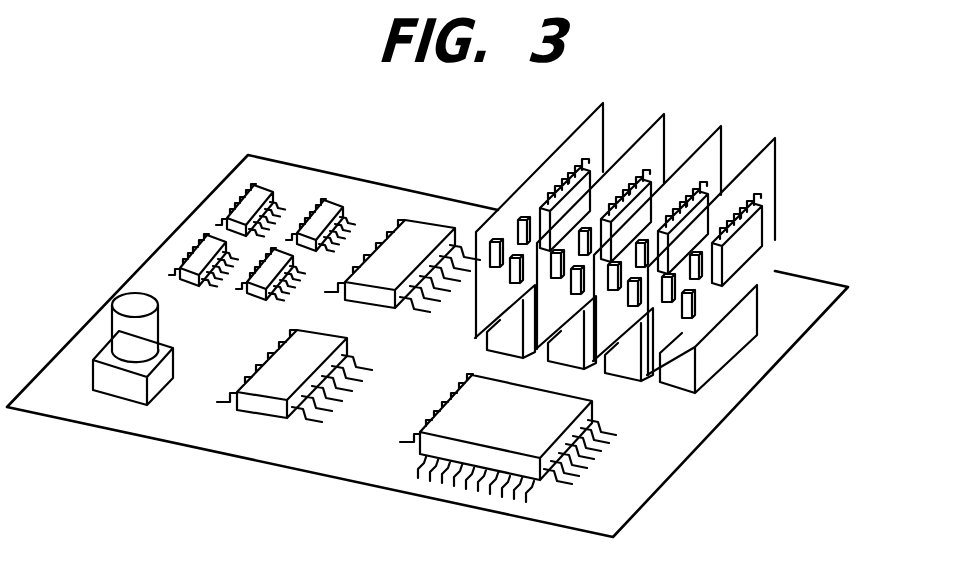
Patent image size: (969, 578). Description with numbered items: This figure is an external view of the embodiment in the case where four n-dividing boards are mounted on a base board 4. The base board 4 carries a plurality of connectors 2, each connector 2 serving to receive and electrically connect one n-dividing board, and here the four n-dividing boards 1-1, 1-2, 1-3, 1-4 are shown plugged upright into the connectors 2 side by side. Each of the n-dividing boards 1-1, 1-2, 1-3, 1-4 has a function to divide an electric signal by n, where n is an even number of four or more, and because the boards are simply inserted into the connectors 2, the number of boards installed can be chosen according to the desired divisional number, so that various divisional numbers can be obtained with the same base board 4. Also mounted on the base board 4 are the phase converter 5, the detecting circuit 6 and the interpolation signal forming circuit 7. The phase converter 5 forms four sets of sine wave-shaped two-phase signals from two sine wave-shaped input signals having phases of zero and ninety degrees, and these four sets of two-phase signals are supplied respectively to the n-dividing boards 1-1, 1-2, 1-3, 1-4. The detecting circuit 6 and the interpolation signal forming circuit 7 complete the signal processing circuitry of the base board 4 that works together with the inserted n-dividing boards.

The n-dividing board 1-1 is at (608, 129).
The n-dividing board 1-2 is at (665, 140).
The n-dividing board 1-3 is at (723, 155).
The n-dividing board 1-4 is at (780, 165).
The connector 2 is at (727, 345).
The base board 4 is at (185, 327).
The phase converter 5 is at (255, 193).
The detecting circuit 6 is at (275, 385).
The interpolation signal forming circuit 7 is at (560, 410).